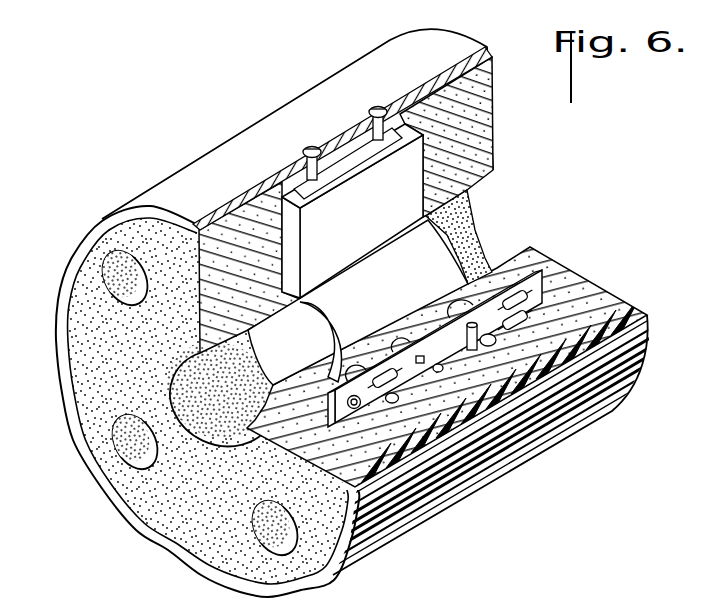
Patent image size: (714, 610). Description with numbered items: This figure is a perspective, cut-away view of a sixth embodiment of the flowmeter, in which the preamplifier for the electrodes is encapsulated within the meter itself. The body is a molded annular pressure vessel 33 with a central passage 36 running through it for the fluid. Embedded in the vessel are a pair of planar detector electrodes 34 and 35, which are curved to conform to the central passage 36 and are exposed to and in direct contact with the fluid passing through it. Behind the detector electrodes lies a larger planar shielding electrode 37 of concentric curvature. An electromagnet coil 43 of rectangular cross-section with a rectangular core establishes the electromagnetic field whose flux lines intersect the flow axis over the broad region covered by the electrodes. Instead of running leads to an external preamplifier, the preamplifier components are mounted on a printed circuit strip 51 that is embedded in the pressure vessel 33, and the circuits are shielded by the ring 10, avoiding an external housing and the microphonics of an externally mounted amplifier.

The ring 10 is at (637, 345).
The molded annular pressure vessel 33 is at (590, 297).
The planar detector electrode 34 is at (268, 356).
The planar detector electrode 35 is at (273, 350).
The central passage 36 is at (167, 385).
The shielding electrode 37 is at (447, 255).
The electromagnet coil 43 is at (380, 222).
The printed circuit strip 51 is at (532, 290).